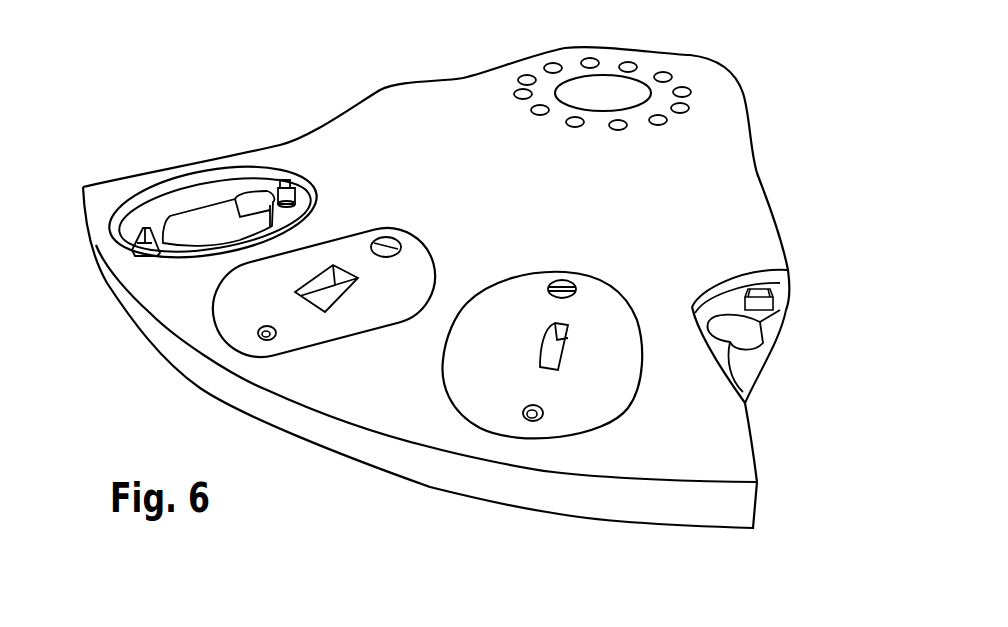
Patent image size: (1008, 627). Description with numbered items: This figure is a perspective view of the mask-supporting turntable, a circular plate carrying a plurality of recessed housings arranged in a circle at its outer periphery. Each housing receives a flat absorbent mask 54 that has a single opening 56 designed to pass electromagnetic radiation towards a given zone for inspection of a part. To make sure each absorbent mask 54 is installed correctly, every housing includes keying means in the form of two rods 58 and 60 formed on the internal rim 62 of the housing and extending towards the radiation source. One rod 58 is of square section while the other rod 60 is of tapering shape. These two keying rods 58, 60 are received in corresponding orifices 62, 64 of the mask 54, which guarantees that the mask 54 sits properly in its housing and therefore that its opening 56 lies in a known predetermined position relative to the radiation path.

The absorbent mask 54 is at (612, 337).
The opening 56 is at (558, 357).
The rod 58 is at (281, 181).
The rod 60 is at (132, 238).
The orifice 62 is at (163, 208).
The orifice 64 is at (525, 410).